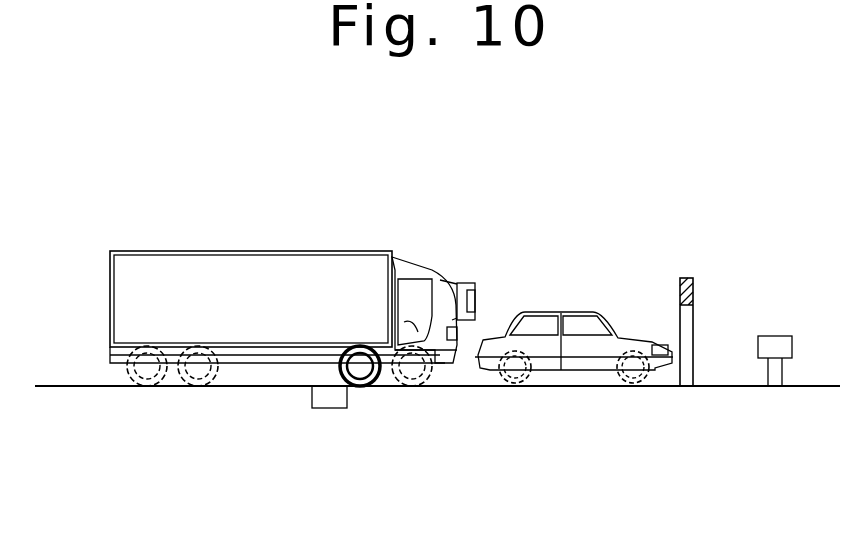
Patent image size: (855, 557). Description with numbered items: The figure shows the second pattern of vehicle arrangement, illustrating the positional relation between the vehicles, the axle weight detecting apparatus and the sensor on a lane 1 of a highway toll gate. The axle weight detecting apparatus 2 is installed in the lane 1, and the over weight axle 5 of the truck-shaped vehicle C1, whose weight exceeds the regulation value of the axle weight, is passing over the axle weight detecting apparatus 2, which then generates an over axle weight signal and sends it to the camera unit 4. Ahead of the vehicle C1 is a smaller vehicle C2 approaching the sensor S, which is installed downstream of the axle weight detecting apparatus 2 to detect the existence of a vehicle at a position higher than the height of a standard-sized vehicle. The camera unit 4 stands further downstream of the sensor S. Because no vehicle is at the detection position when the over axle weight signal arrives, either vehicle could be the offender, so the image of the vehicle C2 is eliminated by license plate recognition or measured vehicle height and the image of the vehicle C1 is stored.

The lane 1 is at (80, 385).
The axle weight detecting apparatus 2 is at (327, 408).
The camera unit 4 is at (768, 342).
The over weight axle 5 is at (360, 360).
The vehicle C1 is at (328, 258).
The vehicle C2 is at (572, 322).
The sensor S is at (687, 278).